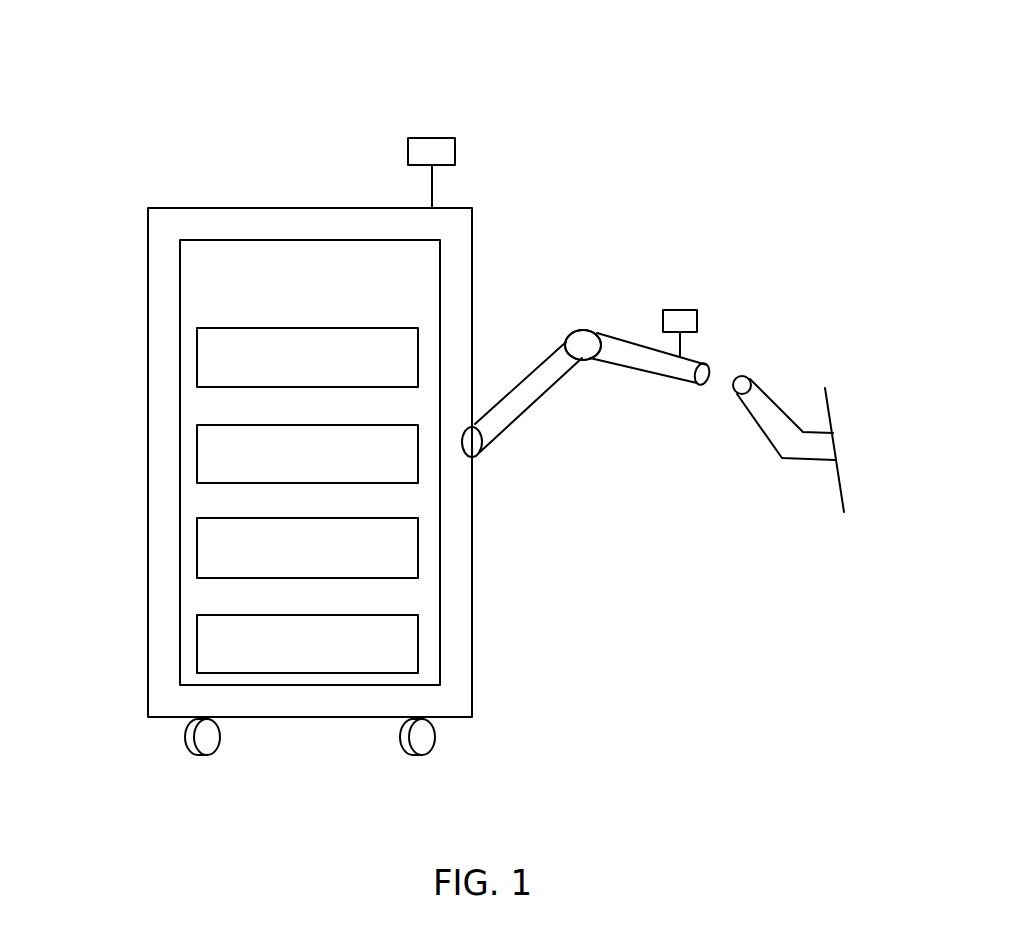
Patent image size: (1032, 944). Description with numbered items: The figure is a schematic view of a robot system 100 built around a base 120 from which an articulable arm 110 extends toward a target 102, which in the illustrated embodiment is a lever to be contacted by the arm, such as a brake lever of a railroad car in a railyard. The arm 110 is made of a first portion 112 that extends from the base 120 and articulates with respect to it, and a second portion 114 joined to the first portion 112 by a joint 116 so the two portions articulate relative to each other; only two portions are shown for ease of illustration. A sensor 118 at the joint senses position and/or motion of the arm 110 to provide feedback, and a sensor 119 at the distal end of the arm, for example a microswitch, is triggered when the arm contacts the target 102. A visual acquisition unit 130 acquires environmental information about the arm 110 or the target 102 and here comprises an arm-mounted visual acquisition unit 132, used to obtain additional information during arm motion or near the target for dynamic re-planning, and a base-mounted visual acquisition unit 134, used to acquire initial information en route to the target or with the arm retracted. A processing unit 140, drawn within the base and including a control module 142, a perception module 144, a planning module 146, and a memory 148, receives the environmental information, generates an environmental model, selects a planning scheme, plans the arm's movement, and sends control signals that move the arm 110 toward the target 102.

The robot system 100 is at (710, 63).
The target 102 is at (776, 393).
The articulable arm 110 is at (570, 326).
The first portion 112 is at (520, 378).
The second portion 114 is at (630, 340).
The joint 116 is at (582, 343).
The sensor 118 is at (583, 360).
The sensor 119 is at (708, 385).
The base 120 is at (148, 242).
The visual acquisition unit 130 is at (448, 177).
The arm-mounted visual acquisition unit 132 is at (680, 310).
The base-mounted visual acquisition unit 134 is at (430, 138).
The processing unit 140 is at (180, 300).
The control module 142 is at (197, 357).
The perception module 144 is at (197, 454).
The planning module 146 is at (197, 548).
The memory 148 is at (197, 642).